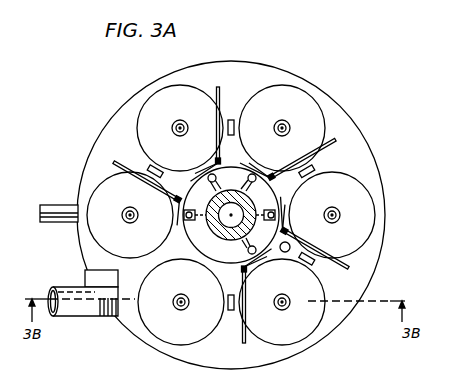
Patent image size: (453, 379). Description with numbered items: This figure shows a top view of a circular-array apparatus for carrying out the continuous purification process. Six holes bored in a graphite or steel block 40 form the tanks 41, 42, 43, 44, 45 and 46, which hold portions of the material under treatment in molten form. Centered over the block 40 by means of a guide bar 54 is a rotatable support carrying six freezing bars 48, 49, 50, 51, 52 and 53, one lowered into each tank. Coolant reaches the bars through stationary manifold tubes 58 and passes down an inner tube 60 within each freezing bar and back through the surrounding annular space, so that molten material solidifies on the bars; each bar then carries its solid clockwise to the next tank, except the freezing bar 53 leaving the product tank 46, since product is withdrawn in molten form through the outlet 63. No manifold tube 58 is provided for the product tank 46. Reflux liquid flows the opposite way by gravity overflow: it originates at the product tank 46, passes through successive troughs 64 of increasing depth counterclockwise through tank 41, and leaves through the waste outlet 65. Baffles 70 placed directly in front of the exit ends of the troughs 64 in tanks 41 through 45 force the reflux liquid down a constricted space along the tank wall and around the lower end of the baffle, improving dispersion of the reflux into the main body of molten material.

The block 40 is at (363, 128).
The tank 41 is at (100, 205).
The tank 42 is at (167, 97).
The tank 43 is at (297, 95).
The tank 44 is at (360, 205).
The tank 45 is at (308, 323).
The product tank 46 is at (173, 332).
The freezing bar 48 is at (123, 211).
The freezing bar 49 is at (172, 126).
The freezing bar 50 is at (281, 120).
The freezing bar 51 is at (339, 211).
The freezing bar 52 is at (290, 303).
The freezing bar 53 is at (175, 306).
The guide bar 54 is at (285, 252).
The stationary manifold tube 58 is at (181, 233).
The inner tube 60 is at (290, 126).
The outlet 63 is at (77, 308).
The trough 64 is at (232, 120).
The waste outlet 65 is at (55, 217).
The baffle 70 is at (218, 87).